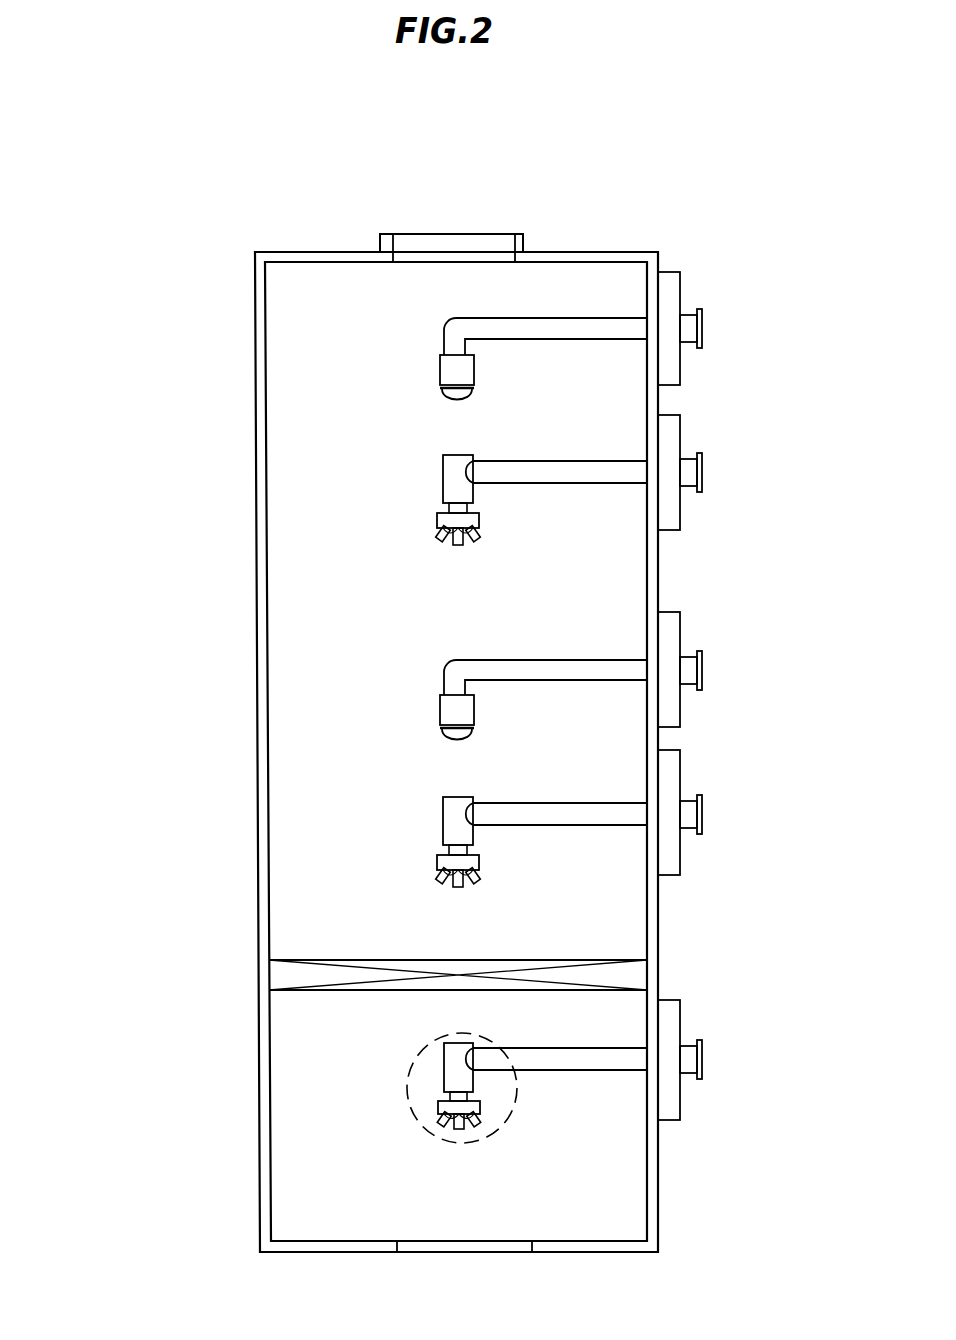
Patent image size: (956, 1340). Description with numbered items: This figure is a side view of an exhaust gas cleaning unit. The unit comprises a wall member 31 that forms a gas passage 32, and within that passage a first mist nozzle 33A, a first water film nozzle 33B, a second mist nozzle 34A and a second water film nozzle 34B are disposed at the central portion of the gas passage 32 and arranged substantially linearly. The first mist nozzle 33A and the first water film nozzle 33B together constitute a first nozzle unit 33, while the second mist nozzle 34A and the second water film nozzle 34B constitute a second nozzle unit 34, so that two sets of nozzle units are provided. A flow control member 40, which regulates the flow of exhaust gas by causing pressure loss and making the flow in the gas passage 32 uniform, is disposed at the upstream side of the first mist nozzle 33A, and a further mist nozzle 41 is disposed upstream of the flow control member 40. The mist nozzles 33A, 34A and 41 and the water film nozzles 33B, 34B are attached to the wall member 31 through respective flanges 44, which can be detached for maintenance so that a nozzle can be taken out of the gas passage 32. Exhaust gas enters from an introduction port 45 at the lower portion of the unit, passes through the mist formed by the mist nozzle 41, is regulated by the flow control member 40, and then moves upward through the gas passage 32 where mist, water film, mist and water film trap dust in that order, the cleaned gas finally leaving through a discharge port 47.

The wall member 31 is at (255, 300).
The gas passage 32 is at (363, 623).
The first nozzle unit 33 is at (337, 776).
The first mist nozzle 33A is at (437, 862).
The first water film nozzle 33B is at (440, 717).
The second nozzle unit 34 is at (337, 432).
The second mist nozzle 34A is at (436, 515).
The second water film nozzle 34B is at (439, 362).
The flow control member 40 is at (380, 960).
The mist nozzle 41 is at (438, 1103).
The flange 44 is at (680, 360).
The introduction port 45 is at (433, 1040).
The discharge port 47 is at (452, 233).